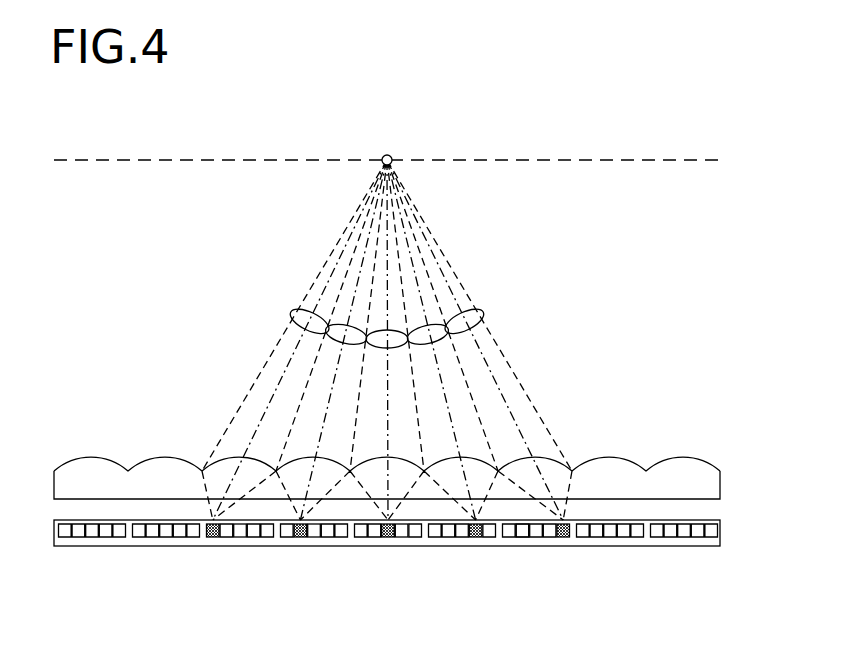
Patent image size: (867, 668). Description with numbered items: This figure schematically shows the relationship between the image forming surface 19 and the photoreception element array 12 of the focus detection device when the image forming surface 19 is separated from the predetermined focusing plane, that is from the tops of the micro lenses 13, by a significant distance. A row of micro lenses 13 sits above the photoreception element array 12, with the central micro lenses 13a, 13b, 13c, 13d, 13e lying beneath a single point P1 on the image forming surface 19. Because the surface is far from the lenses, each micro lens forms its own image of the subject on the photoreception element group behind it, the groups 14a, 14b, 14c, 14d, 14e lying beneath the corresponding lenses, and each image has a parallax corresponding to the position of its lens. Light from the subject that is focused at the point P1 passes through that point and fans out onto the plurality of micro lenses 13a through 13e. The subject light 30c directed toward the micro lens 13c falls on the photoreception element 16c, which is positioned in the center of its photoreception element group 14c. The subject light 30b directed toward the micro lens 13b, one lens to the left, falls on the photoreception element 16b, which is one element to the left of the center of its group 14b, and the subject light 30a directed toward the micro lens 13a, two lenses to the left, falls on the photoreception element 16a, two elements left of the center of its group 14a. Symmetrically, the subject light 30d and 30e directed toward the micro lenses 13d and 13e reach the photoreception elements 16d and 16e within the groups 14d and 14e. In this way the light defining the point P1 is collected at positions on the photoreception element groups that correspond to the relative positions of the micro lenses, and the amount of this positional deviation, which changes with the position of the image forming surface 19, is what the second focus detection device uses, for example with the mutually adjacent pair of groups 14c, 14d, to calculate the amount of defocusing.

The photoreception element array 12 is at (723, 530).
The micro lenses 13 is at (707, 488).
The micro lens 13a is at (223, 462).
The micro lens 13b is at (298, 460).
The micro lens 13c is at (417, 462).
The micro lens 13d is at (480, 460).
The micro lens 13e is at (553, 463).
The photoreception element group 14a is at (238, 546).
The photoreception element group 14b is at (315, 546).
The photoreception element group 14c is at (398, 546).
The photoreception element group 14d is at (440, 546).
The photoreception element group 14e is at (522, 546).
The photoreception element 16a is at (213, 535).
The photoreception element 16b is at (298, 535).
The photoreception element 16c is at (385, 535).
The photoreception element 16d is at (473, 535).
The photoreception element 16e is at (563, 535).
The image forming surface 19 is at (532, 160).
The subject light 30a is at (300, 318).
The subject light 30b is at (338, 328).
The subject light 30c is at (398, 330).
The subject light 30d is at (432, 327).
The subject light 30e is at (467, 320).
The point P1 is at (392, 156).